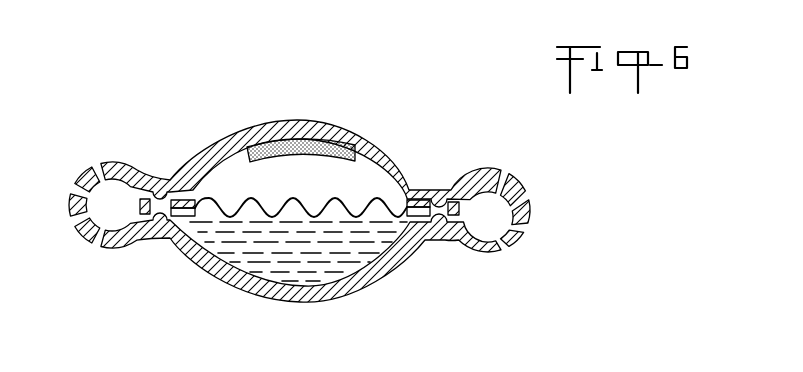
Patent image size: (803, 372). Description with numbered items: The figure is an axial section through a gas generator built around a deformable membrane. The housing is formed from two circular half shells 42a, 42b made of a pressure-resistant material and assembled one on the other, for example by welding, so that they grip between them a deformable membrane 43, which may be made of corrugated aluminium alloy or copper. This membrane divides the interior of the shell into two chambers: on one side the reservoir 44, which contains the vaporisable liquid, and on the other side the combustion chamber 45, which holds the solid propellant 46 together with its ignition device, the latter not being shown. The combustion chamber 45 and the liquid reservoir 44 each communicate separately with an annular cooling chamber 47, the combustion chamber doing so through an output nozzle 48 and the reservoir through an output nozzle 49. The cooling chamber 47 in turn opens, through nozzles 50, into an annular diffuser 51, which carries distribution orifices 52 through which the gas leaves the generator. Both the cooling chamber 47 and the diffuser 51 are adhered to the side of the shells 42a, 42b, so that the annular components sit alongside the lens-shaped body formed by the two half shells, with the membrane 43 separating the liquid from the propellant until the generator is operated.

The circular half shell 42a is at (366, 144).
The circular half shell 42b is at (252, 290).
The deformable membrane 43 is at (301, 206).
The reservoir 44 is at (237, 247).
The combustion chamber 45 is at (301, 210).
The solid propellant 46 is at (301, 148).
The annular cooling chamber 47 is at (441, 200).
The output nozzle 48 is at (418, 199).
The output nozzle 49 is at (418, 217).
The nozzles 50 is at (494, 190).
The annular diffuser 51 is at (491, 191).
The distribution orifices 52 is at (526, 224).